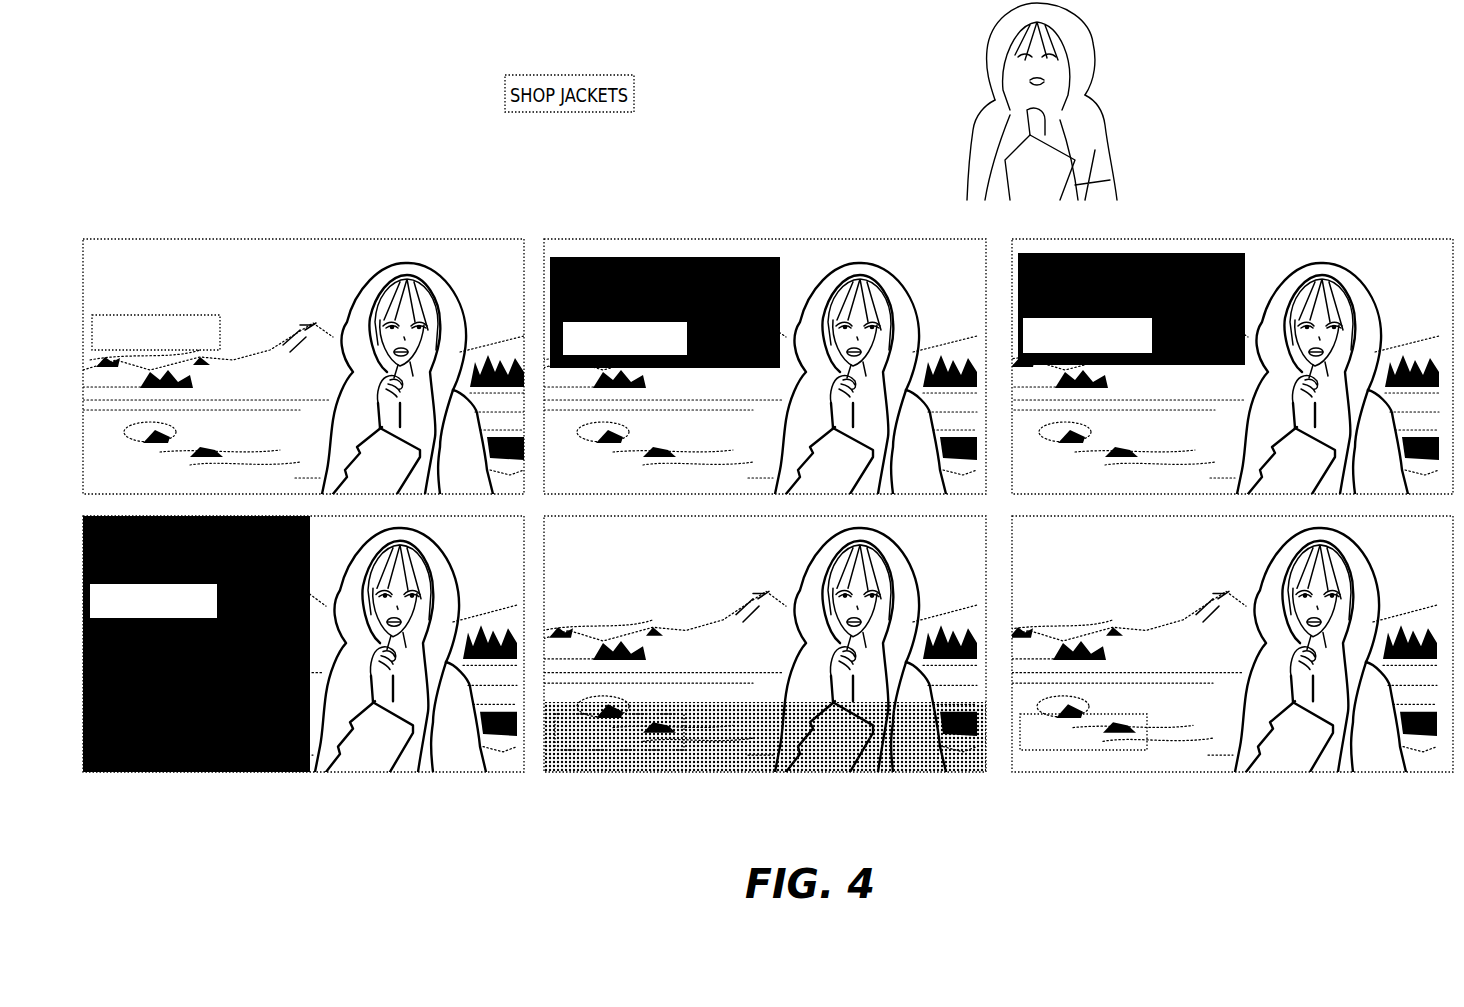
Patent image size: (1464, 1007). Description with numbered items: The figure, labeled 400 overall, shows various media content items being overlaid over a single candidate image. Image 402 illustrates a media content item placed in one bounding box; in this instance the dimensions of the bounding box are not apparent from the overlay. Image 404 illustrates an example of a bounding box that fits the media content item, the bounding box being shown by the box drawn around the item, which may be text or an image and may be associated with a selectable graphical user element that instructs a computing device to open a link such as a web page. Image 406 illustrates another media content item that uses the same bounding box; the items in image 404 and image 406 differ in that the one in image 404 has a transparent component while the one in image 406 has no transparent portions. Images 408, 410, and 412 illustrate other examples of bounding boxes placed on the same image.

The example of generating advertisement variations from content items 400 is at (1245, 85).
The image 402 is at (305, 239).
The image 404 is at (717, 257).
The image 406 is at (1123, 253).
The image 408 is at (428, 772).
The image 410 is at (790, 772).
The image 412 is at (1230, 772).